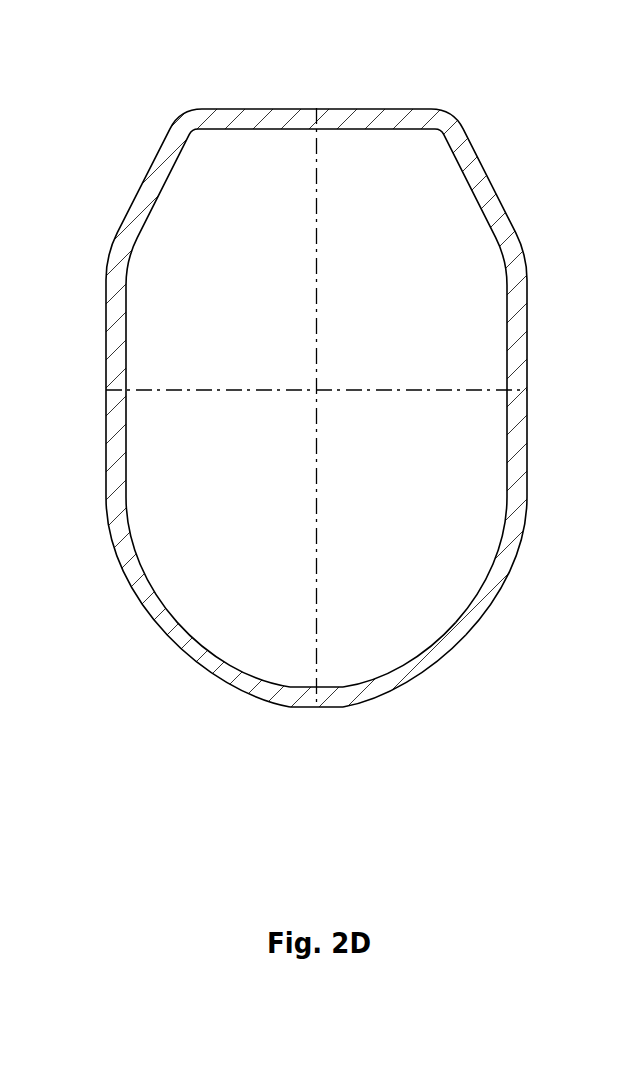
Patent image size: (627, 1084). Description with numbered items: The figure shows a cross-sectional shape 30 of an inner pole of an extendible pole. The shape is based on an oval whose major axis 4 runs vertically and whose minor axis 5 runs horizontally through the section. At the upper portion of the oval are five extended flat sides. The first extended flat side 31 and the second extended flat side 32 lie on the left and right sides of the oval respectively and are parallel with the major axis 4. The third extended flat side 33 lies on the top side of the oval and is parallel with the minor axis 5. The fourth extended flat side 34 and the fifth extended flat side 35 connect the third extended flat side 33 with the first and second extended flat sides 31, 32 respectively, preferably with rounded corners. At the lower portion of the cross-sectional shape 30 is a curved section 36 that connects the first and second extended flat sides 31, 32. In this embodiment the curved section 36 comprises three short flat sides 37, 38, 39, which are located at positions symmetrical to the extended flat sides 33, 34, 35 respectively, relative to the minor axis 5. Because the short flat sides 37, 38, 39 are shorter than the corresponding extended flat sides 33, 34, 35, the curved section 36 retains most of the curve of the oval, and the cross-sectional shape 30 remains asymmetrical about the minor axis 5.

The cross-sectional shape 30 is at (143, 126).
The first extended flat side 31 is at (118, 363).
The second extended flat side 32 is at (517, 358).
The third extended flat side 33 is at (282, 120).
The fourth extended flat side 34 is at (139, 186).
The fifth extended flat side 35 is at (485, 183).
The curved section 36 is at (435, 667).
The short flat side 37 is at (327, 693).
The short flat side 38 is at (142, 583).
The short flat side 39 is at (495, 585).
The major axis 4 is at (317, 280).
The minor axis 5 is at (400, 393).